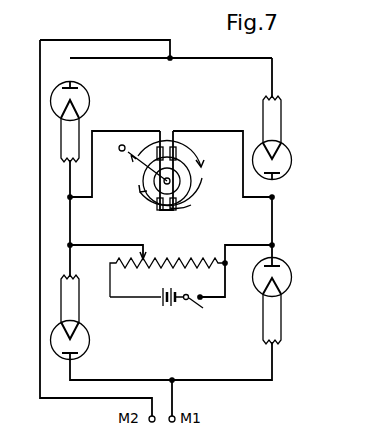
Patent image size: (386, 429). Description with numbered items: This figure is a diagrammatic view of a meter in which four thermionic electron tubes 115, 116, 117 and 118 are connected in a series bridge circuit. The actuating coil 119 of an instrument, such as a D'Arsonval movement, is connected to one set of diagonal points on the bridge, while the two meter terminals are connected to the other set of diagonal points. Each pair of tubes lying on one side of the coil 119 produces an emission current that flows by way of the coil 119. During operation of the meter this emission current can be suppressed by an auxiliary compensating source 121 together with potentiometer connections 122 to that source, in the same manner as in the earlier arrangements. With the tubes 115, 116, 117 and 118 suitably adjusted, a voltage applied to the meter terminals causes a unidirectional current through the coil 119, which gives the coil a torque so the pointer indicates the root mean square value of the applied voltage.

The thermionic electron tube 115 is at (90, 100).
The thermionic electron tube 116 is at (290, 155).
The thermionic electron tube 117 is at (289, 288).
The thermionic electron tube 118 is at (90, 342).
The actuating coil 119 is at (190, 198).
The auxiliary compensating source 121 is at (164, 304).
The potentiometer connections 122 is at (176, 258).